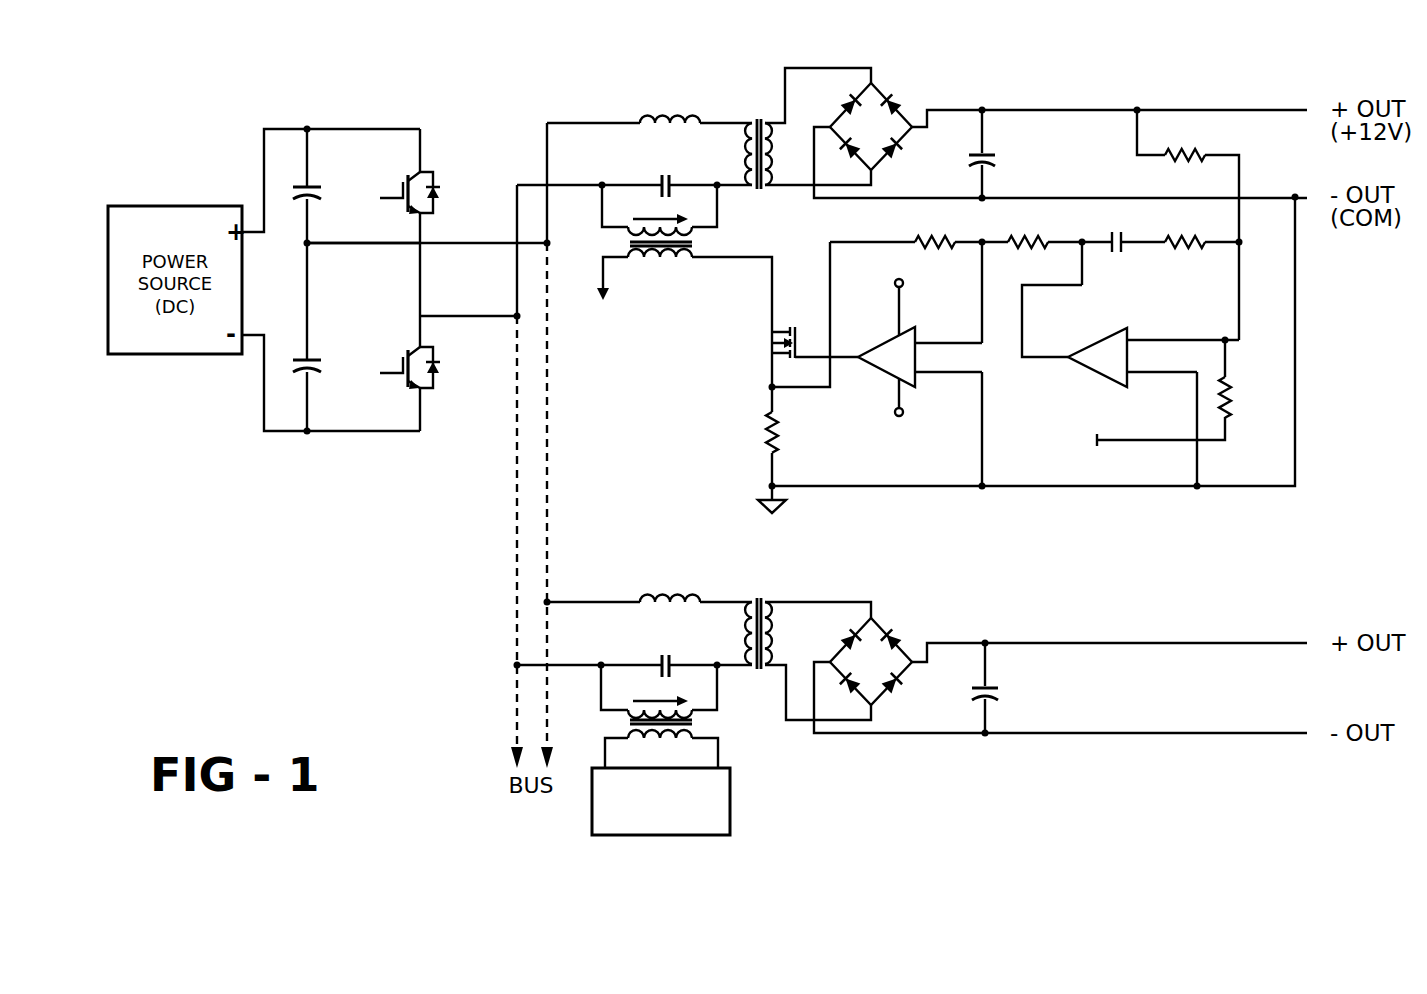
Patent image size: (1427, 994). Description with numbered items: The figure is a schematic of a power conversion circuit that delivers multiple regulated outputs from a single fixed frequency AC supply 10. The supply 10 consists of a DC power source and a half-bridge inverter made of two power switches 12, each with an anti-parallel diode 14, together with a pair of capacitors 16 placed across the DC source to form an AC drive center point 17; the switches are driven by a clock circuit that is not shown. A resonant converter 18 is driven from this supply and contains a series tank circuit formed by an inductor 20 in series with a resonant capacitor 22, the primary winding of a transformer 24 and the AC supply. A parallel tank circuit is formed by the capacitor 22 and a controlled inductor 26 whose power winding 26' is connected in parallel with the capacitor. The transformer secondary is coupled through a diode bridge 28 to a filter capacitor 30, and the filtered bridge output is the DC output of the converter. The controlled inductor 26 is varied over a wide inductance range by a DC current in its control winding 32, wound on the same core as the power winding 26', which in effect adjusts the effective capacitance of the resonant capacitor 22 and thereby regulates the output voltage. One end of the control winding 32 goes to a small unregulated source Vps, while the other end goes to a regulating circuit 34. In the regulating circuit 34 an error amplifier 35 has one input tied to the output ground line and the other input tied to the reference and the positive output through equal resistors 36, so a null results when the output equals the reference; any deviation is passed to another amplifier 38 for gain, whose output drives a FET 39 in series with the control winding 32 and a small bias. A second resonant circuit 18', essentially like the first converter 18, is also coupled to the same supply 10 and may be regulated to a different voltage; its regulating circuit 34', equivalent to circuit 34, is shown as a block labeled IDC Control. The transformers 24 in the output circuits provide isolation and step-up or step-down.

The fixed frequency AC supply 10 is at (330, 462).
The power switch 12 is at (398, 184).
The anti-parallel diode 14 is at (441, 189).
The capacitor 16 is at (296, 190).
The AC drive center point 17 is at (307, 243).
The resonant converter 18 is at (642, 43).
The second resonant circuit 18' is at (1024, 607).
The inductor 20 is at (681, 118).
The resonant capacitor 22 is at (662, 176).
The transformer 24 is at (767, 188).
The controlled inductor 26 is at (637, 455).
The power winding 26' is at (697, 502).
The diode bridge 28 is at (880, 95).
The filter capacitor 30 is at (996, 154).
The control winding 32 is at (660, 258).
The regulating circuit 34 is at (1077, 310).
The regulating circuit 34' is at (702, 821).
The error amplifier 35 is at (1117, 330).
The resistor 36 is at (1202, 150).
The amplifier 38 is at (878, 372).
The FET 39 is at (772, 345).